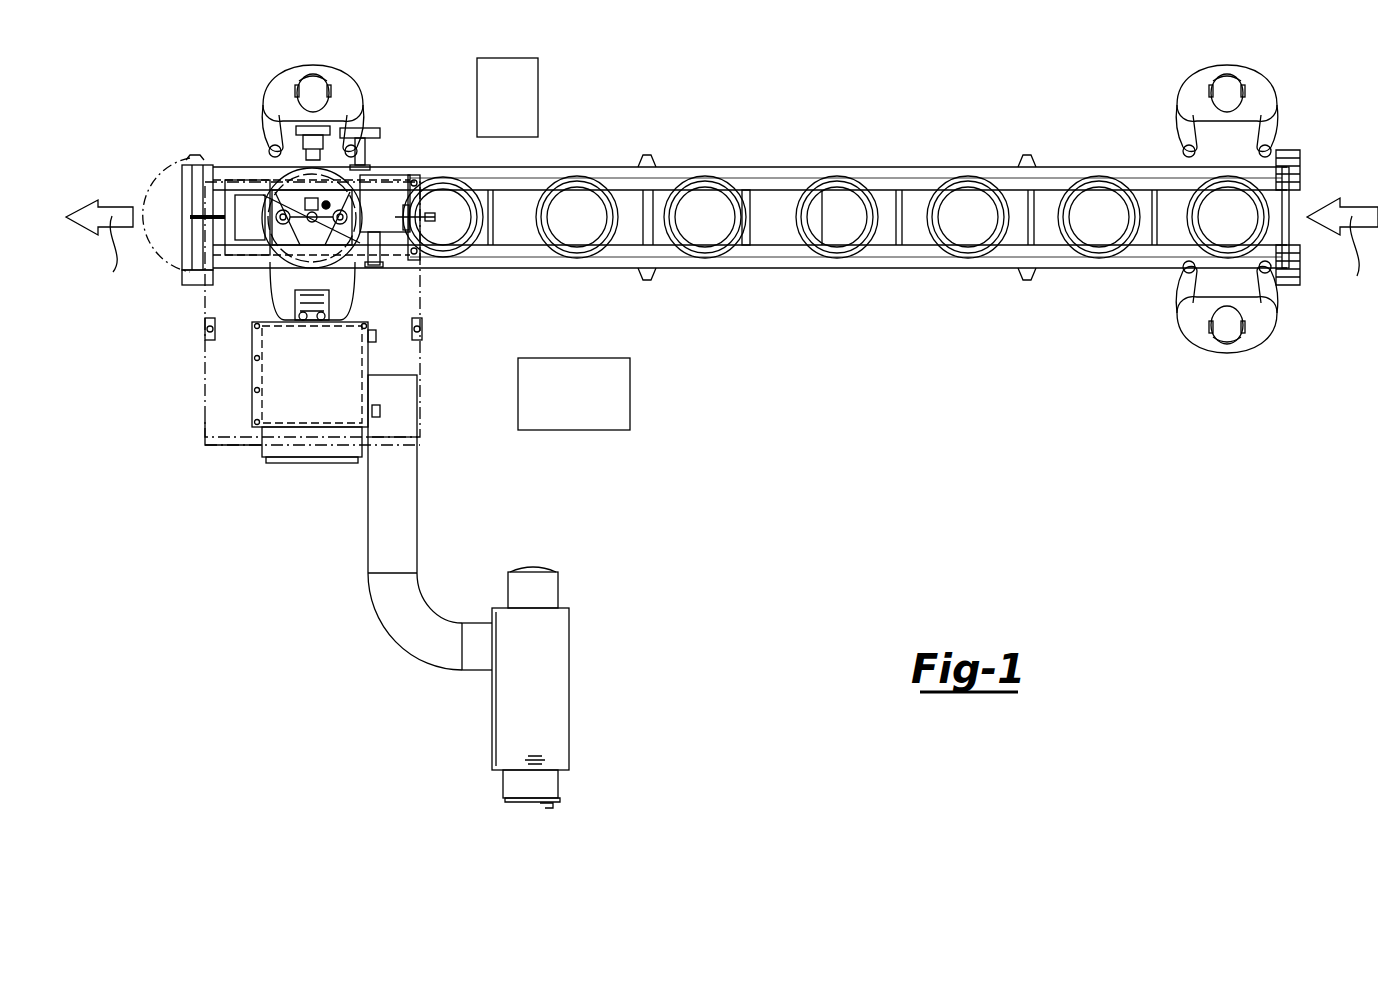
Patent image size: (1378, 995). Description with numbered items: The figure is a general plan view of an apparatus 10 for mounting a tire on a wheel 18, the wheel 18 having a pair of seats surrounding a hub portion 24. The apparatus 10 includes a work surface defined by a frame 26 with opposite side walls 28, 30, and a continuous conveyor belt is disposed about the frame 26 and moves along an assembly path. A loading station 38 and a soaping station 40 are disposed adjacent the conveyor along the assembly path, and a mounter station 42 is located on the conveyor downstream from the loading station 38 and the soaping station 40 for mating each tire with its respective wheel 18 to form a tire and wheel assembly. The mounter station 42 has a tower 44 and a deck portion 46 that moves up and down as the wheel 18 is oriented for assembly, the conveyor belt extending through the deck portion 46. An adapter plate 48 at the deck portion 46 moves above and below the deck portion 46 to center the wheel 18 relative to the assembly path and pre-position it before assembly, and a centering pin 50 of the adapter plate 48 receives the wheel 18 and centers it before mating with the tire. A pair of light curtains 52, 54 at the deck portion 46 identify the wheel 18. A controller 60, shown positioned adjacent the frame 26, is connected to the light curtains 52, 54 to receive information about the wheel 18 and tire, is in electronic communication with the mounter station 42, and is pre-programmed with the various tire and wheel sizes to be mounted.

The apparatus 10 is at (634, 116).
The wheel 18 is at (704, 252).
The hub portion 24 is at (573, 214).
The frame 26 is at (697, 163).
The side wall 28 is at (778, 183).
The side wall 30 is at (788, 255).
The loading station 38 is at (1324, 133).
The soaping station 40 is at (494, 106).
The mounter station 42 is at (142, 112).
The tower 44 is at (300, 381).
The deck portion 46 is at (337, 240).
The adapter plate 48 is at (303, 232).
The centering pin 50 is at (316, 222).
The light curtain 52 is at (362, 232).
The light curtain 54 is at (297, 207).
The controller 60 is at (560, 405).